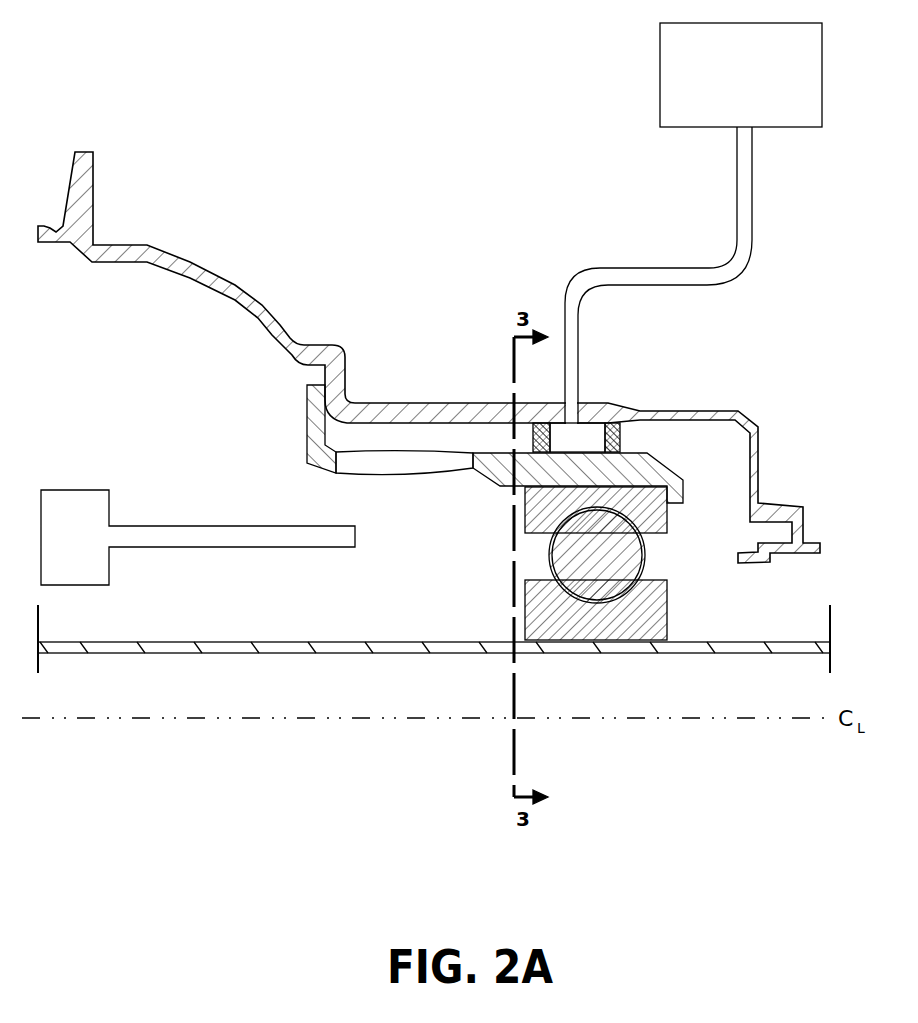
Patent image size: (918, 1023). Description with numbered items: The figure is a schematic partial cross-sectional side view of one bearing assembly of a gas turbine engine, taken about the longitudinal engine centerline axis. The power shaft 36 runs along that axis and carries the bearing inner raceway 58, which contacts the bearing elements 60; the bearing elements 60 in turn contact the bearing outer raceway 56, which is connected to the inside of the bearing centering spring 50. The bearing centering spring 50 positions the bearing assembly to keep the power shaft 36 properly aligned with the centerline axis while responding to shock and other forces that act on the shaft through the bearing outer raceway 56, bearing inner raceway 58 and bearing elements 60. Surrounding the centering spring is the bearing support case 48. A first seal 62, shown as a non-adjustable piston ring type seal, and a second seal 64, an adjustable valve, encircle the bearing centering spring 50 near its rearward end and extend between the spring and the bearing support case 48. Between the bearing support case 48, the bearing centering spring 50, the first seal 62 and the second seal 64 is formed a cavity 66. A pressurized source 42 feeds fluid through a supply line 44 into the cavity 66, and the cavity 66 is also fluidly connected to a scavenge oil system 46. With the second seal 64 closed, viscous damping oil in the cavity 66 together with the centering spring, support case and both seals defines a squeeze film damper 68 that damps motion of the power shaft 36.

The power shaft 36 is at (786, 640).
The pressurized source 42 is at (660, 60).
The supply line 44 is at (755, 176).
The scavenge oil system 46 is at (137, 525).
The bearing support case 48 is at (262, 303).
The bearing centering spring 50 is at (305, 417).
The bearing outer raceway 56 is at (667, 518).
The bearing inner raceway 58 is at (668, 607).
The bearing elements 60 is at (643, 550).
The first seal 62 is at (620, 431).
The second seal 64 is at (542, 430).
The cavity 66 is at (597, 433).
The squeeze film damper 68 is at (640, 385).